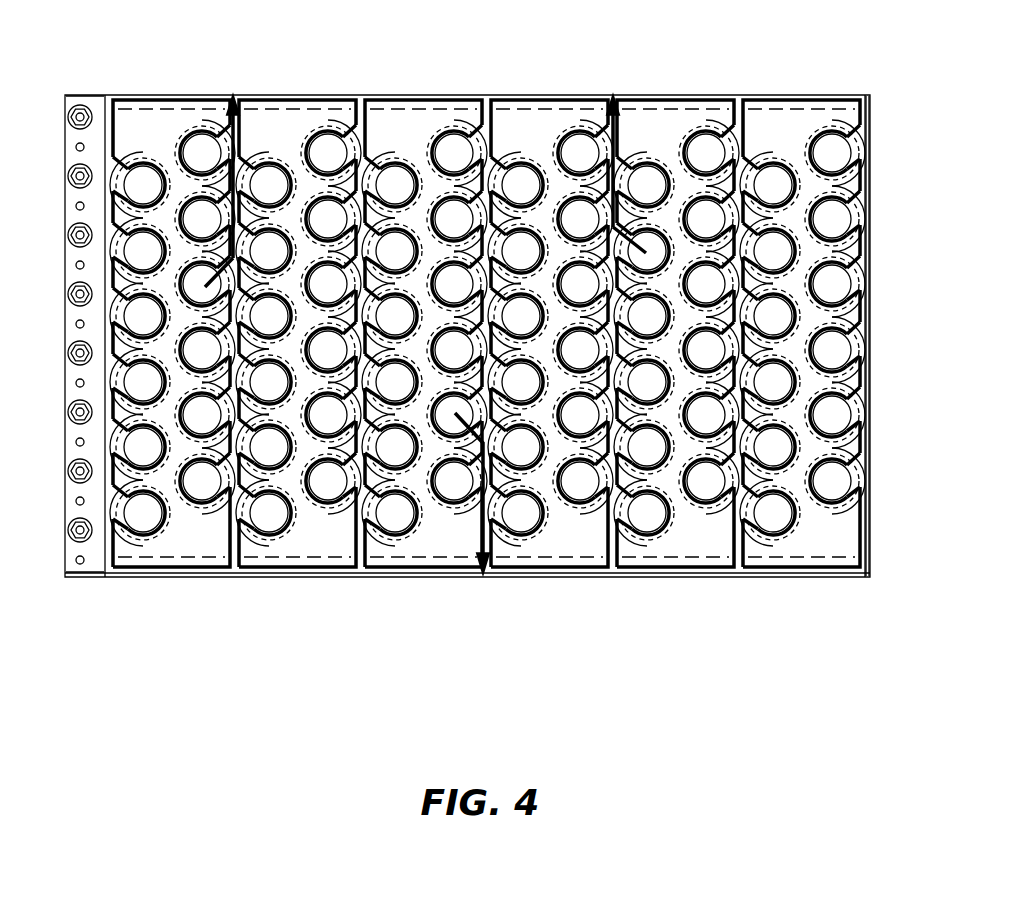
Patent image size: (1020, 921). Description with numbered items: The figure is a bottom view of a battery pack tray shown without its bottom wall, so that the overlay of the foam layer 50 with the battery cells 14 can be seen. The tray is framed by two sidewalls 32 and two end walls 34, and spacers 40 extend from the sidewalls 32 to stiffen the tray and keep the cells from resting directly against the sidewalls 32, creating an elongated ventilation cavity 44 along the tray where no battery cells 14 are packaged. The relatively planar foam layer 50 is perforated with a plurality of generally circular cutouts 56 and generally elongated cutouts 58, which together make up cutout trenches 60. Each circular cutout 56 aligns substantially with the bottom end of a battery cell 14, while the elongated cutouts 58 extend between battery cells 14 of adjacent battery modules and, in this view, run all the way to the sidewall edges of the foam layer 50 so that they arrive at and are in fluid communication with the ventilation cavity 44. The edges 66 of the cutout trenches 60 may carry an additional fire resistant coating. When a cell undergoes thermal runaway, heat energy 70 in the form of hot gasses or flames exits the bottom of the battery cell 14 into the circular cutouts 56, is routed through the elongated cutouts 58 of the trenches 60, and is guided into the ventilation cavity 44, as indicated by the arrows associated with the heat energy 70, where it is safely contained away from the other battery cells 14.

The battery cell 14 is at (372, 160).
The sidewall 32 is at (190, 95).
The end wall 34 is at (66, 300).
The spacer 40 is at (868, 98).
The ventilation cavity 44 is at (95, 95).
The foam layer 50 is at (143, 130).
The circular cutout 56 is at (517, 160).
The elongated cutout 58 is at (112, 215).
The cutout trench 60 is at (338, 195).
The edge 66 is at (400, 520).
The heat energy 70 is at (238, 128).